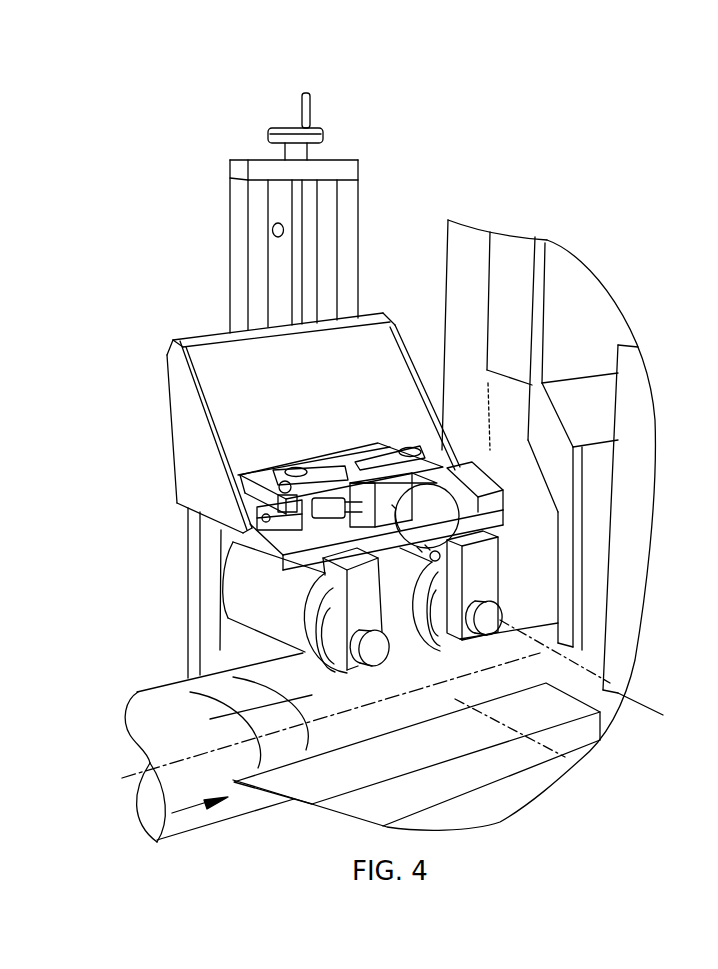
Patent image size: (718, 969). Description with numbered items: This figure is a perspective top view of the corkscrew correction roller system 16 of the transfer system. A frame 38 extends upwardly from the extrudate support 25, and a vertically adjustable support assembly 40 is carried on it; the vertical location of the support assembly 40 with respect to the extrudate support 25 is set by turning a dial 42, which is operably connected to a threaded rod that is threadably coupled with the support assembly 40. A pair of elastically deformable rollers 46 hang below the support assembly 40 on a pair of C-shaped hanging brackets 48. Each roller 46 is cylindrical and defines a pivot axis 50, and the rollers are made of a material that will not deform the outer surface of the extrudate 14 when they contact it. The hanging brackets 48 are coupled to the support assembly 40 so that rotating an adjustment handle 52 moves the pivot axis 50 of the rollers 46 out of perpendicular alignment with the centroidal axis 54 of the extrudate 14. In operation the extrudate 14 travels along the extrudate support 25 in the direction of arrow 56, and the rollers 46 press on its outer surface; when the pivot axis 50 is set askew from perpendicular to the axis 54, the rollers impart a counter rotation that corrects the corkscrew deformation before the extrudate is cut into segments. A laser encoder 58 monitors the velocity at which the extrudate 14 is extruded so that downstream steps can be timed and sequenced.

The extrudate 14 is at (175, 693).
The corkscrew correction roller system 16 is at (458, 160).
The extrudate support 25 is at (493, 770).
The frame 38 is at (190, 572).
The support assembly 40 is at (190, 483).
The dial 42 is at (323, 132).
The elastically deformable rollers 46 is at (250, 614).
The C-shaped hanging brackets 48 is at (372, 598).
The pivot axis 50 is at (638, 697).
The adjustment handle 52 is at (443, 525).
The centroidal axis 54 is at (131, 775).
The arrow 56 is at (216, 805).
The laser encoder 58 is at (520, 492).